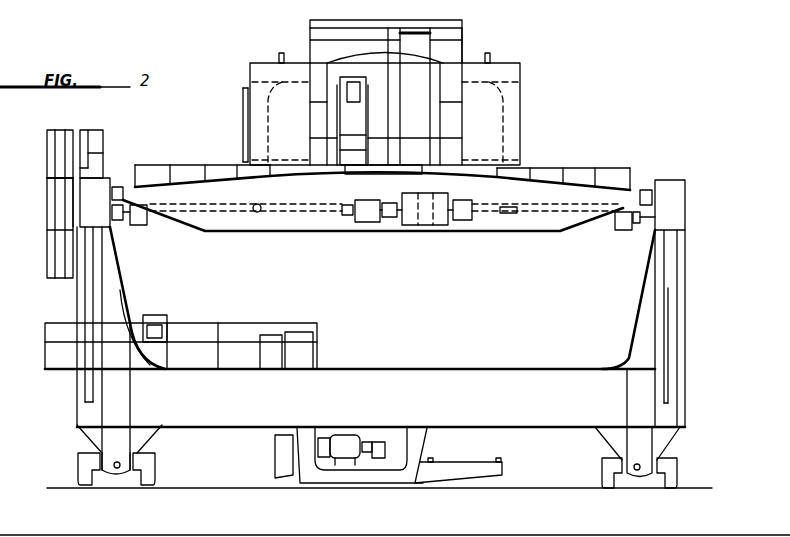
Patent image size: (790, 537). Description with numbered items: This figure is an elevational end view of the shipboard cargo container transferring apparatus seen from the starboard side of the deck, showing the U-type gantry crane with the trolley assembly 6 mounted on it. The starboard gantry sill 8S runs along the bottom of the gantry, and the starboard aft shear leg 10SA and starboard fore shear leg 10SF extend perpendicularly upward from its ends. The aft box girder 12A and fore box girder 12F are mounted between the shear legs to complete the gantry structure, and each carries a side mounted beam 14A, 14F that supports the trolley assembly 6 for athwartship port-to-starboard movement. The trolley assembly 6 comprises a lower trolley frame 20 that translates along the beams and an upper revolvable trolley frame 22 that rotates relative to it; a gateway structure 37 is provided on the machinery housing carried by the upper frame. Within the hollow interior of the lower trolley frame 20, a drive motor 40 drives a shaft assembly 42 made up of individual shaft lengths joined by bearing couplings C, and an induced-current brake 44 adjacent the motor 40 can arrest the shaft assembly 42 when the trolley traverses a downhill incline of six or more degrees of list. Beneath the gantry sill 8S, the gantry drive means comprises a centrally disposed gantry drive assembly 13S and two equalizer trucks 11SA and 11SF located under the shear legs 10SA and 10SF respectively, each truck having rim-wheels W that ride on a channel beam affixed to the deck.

The trolley assembly 6 is at (481, 50).
The starboard gantry sill 8S is at (457, 378).
The starboard aft shear leg 10SA is at (110, 285).
The starboard fore shear leg 10SF is at (648, 345).
The aft equalizer truck 11SA is at (121, 483).
The fore equalizer truck 11SF is at (637, 482).
The aft box girder 12A is at (102, 192).
The fore box girder 12F is at (672, 208).
The gantry drive assembly 13S is at (350, 442).
The aft side mounted beam 14A is at (122, 225).
The fore side mounted beam 14F is at (642, 230).
The lower trolley frame 20 is at (310, 218).
The upper revolvable trolley frame 22 is at (395, 167).
The gateway structure 37 is at (325, 28).
The drive motor 40 is at (425, 226).
The shaft assembly 42 is at (273, 212).
The induced-current brake 44 is at (365, 223).
The bearing couplings C is at (262, 210).
The rim-wheels W is at (78, 465).